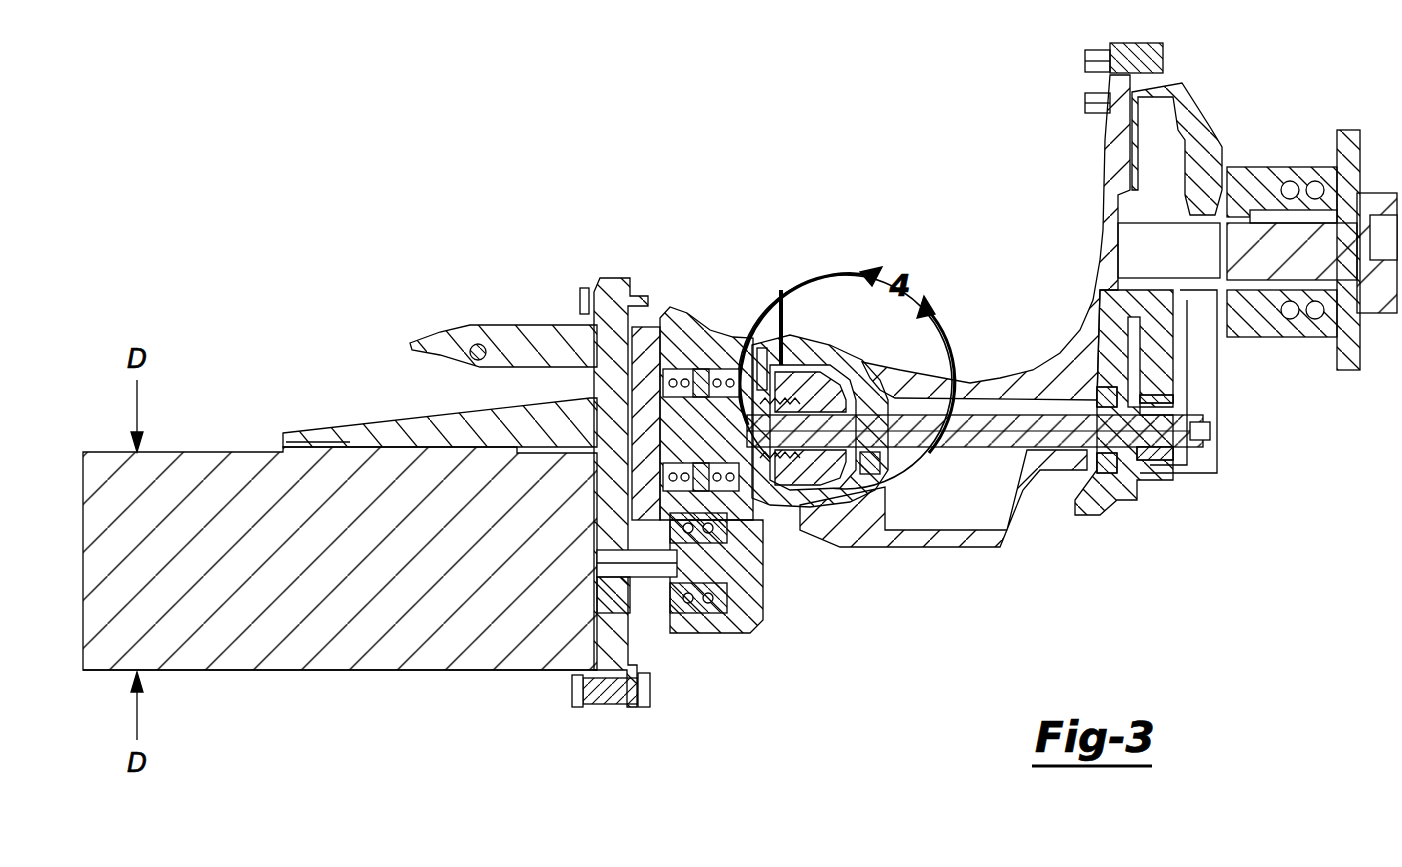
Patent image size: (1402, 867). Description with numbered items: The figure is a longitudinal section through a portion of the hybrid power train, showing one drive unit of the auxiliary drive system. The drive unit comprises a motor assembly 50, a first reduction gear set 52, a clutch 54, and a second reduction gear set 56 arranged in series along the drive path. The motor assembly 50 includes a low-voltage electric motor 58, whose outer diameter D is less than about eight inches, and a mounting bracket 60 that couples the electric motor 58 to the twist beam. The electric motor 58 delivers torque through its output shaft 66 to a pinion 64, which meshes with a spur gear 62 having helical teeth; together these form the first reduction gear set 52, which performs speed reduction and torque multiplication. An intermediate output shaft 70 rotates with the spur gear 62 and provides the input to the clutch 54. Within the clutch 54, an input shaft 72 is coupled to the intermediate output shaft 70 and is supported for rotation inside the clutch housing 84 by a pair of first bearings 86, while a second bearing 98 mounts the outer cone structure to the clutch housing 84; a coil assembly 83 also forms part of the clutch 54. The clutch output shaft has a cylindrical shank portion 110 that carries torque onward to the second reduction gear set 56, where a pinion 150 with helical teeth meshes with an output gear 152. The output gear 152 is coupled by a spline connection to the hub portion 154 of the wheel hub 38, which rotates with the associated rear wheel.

The wheel hub 38 is at (1364, 348).
The motor assembly 50 is at (410, 722).
The first reduction gear set 52 is at (640, 618).
The clutch 54 is at (845, 362).
The second reduction gear set 56 is at (1196, 398).
The electric motor 58 is at (242, 668).
The mounting bracket 60 is at (388, 430).
The spur gear 62 is at (655, 330).
The pinion 64 is at (650, 598).
The output shaft 66 is at (617, 563).
The intermediate output shaft 70 is at (683, 441).
The input shaft 72 is at (850, 398).
The coil assembly 83 is at (758, 346).
The clutch housing 84 is at (752, 598).
The first bearings 86 is at (690, 368).
The second bearing 98 is at (850, 468).
The shank portion 110 is at (984, 418).
The pinion 150 is at (1170, 462).
The output gear 152 is at (1170, 108).
The hub portion 154 is at (1282, 200).